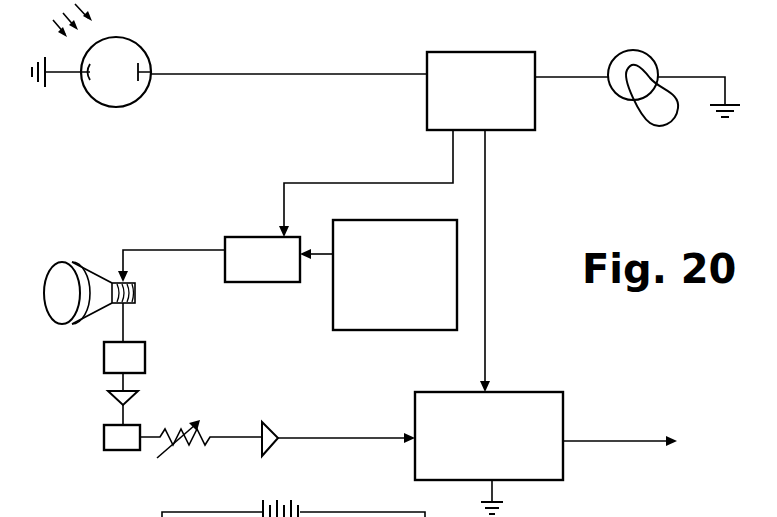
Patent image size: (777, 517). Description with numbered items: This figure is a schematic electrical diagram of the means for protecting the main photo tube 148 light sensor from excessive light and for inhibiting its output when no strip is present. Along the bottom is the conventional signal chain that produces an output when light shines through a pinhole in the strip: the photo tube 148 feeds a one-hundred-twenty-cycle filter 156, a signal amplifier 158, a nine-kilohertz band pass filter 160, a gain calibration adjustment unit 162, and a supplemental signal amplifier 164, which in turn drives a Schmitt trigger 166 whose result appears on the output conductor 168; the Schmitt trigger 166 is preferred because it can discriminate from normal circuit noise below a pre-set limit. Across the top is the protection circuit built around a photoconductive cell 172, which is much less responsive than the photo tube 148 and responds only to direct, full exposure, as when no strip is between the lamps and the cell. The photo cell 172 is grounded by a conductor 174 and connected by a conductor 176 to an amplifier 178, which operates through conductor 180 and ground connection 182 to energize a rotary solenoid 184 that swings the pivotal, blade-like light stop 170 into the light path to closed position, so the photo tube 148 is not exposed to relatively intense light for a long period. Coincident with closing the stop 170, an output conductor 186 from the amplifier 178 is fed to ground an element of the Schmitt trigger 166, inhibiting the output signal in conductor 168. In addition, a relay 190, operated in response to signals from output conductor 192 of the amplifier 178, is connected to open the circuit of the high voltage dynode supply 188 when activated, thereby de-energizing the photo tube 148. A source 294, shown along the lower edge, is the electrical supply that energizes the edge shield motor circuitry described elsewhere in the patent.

The photo tube 148 is at (76, 262).
The 120-cycle filter 156 is at (105, 357).
The signal amplifier 158 is at (138, 395).
The 9K Hz band pass filter 160 is at (104, 437).
The gain calibration adjustment unit 162 is at (203, 432).
The supplemental signal amplifier 164 is at (272, 426).
The Schmitt trigger 166 is at (529, 398).
The output conductor 168 is at (610, 440).
The light stop 170 is at (657, 124).
The photoconductive cell 172 is at (150, 66).
The conductor 174 is at (64, 74).
The conductor 176 is at (301, 74).
The amplifier 178 is at (471, 62).
The conductor 180 is at (570, 77).
The ground connection 182 is at (703, 77).
The rotary solenoid 184 is at (634, 52).
The output conductor 186 is at (487, 227).
The high voltage dynode supply 188 is at (382, 330).
The relay 190 is at (267, 283).
The output conductor 192 is at (368, 183).
The source 294 is at (300, 511).